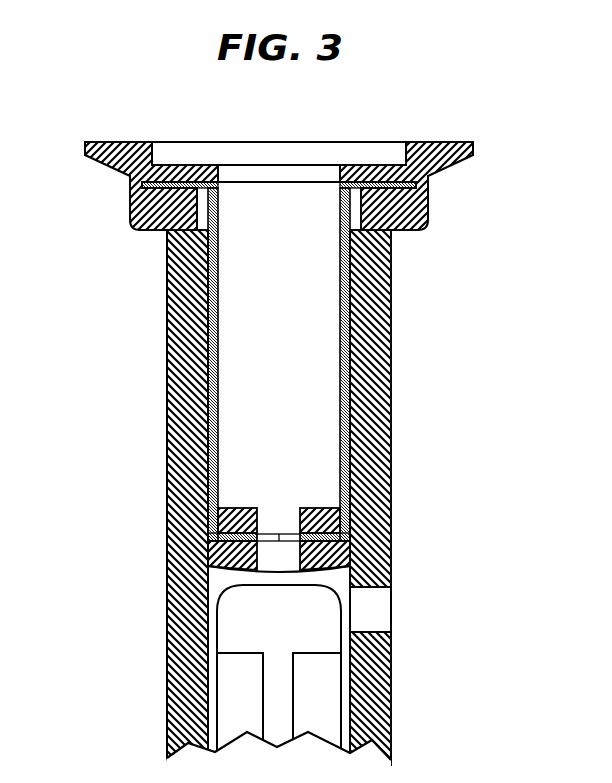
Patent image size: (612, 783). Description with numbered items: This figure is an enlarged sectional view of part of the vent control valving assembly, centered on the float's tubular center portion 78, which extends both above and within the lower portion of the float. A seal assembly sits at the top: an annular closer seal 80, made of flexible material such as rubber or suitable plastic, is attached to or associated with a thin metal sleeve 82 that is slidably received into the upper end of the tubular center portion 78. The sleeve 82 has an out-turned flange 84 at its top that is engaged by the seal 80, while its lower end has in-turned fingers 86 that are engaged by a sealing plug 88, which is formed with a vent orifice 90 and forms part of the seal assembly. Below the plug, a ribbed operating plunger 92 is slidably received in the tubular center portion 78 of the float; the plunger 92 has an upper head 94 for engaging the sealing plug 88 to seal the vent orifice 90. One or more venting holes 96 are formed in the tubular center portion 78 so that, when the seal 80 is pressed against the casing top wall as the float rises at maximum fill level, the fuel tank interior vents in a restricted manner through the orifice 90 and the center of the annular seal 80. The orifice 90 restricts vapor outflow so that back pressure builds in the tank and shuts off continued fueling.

The tubular center portion 78 is at (392, 424).
The annular closer seal 80 is at (100, 136).
The thin metal sleeve 82 is at (216, 431).
The out-turned flange 84 is at (205, 182).
The in-turned fingers 86 is at (227, 535).
The sealing plug 88 is at (228, 503).
The vent orifice 90 is at (273, 524).
The ribbed operating plunger 92 is at (313, 695).
The upper head 94 is at (229, 632).
The venting holes 96 is at (373, 610).